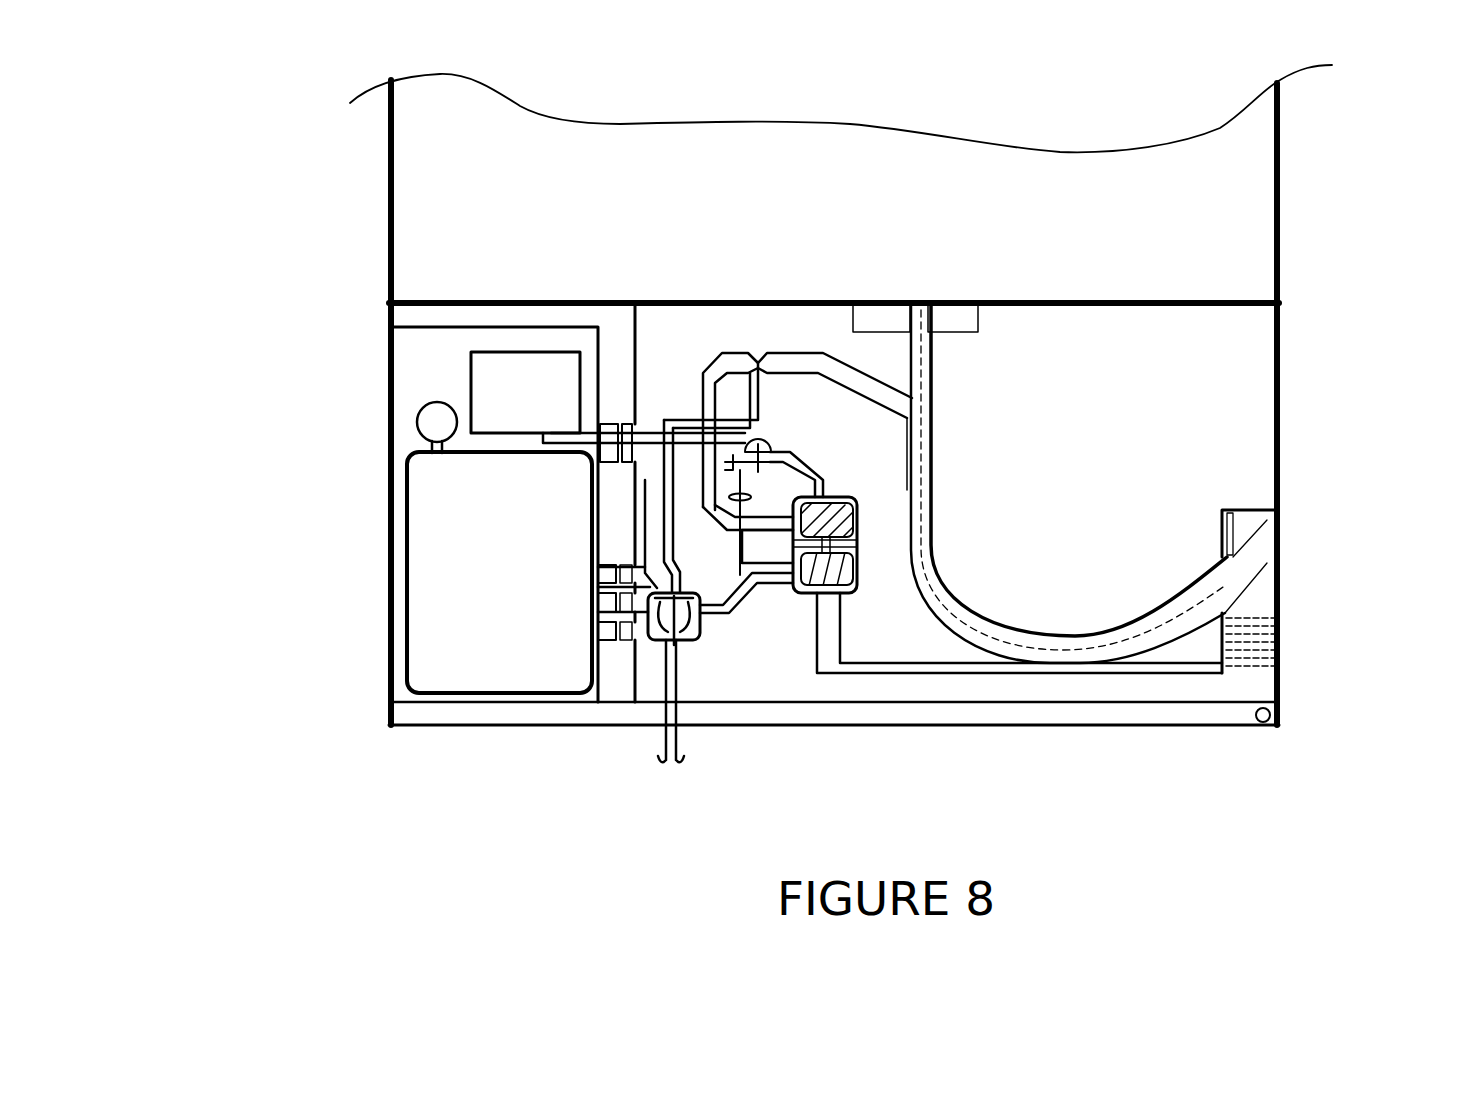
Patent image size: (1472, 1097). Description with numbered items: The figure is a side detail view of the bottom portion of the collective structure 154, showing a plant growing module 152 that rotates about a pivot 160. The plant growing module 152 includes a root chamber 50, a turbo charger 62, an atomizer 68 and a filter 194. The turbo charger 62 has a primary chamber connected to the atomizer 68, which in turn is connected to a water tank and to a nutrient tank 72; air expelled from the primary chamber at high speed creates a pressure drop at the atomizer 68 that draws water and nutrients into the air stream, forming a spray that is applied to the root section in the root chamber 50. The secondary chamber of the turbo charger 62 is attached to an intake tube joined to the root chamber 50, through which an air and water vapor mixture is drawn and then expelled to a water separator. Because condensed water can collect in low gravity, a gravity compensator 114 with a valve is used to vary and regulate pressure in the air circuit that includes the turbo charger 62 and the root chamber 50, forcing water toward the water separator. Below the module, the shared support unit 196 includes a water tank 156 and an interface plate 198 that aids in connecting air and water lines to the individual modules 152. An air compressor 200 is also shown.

The root chamber 50 is at (935, 470).
The turbo-charger 62 is at (813, 600).
The atomizer 68 is at (790, 345).
The nutrient tank 72 is at (420, 415).
The gravity compensator 114 is at (775, 447).
The plant growing module 152 is at (1296, 245).
The collective structure 154 is at (335, 200).
The water tank 156 is at (447, 655).
The pivot 160 is at (1272, 712).
The filter 194 is at (1240, 662).
The shared support unit 196 is at (360, 540).
The interface plate 198 is at (621, 650).
The air compressor 200 is at (492, 383).